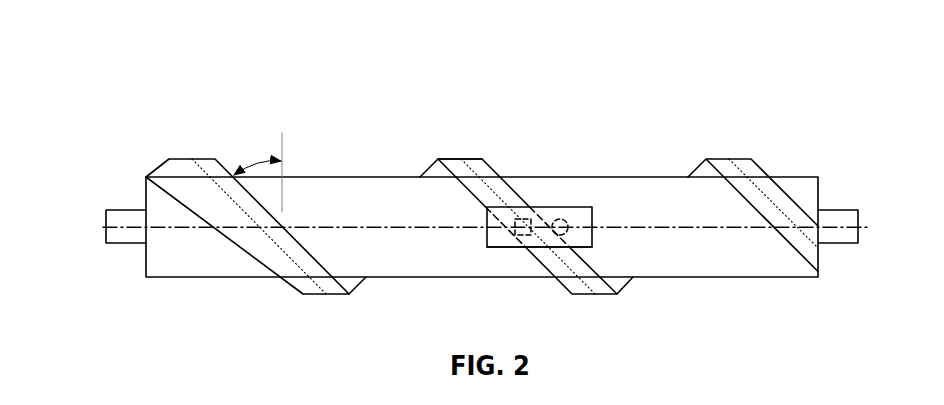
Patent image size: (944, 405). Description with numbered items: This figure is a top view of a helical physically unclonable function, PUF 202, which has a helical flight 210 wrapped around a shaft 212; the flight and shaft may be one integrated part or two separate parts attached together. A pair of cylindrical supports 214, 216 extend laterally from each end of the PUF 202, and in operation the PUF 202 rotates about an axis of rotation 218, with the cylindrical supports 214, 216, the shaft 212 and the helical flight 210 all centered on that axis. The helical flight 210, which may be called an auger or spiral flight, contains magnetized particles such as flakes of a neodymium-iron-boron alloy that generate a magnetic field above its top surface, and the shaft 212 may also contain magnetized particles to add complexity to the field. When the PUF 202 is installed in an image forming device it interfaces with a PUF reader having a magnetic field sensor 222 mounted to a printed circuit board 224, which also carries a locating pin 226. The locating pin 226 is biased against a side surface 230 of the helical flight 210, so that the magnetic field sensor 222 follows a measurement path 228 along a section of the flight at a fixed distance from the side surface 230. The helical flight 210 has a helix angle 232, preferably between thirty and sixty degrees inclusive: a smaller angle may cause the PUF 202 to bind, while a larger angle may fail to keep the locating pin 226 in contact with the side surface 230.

The PUF 202 is at (161, 72).
The helical flight 210 is at (467, 156).
The shaft 212 is at (342, 177).
The cylindrical support 214 is at (122, 245).
The cylindrical support 216 is at (852, 244).
The axis of rotation 218 is at (101, 225).
The magnetic field sensor 222 is at (529, 220).
The printed circuit board 224 is at (493, 247).
The locating pin 226 is at (566, 221).
The measurement path 228 is at (482, 158).
The side surface 230 is at (594, 264).
The helix angle 232 is at (258, 172).